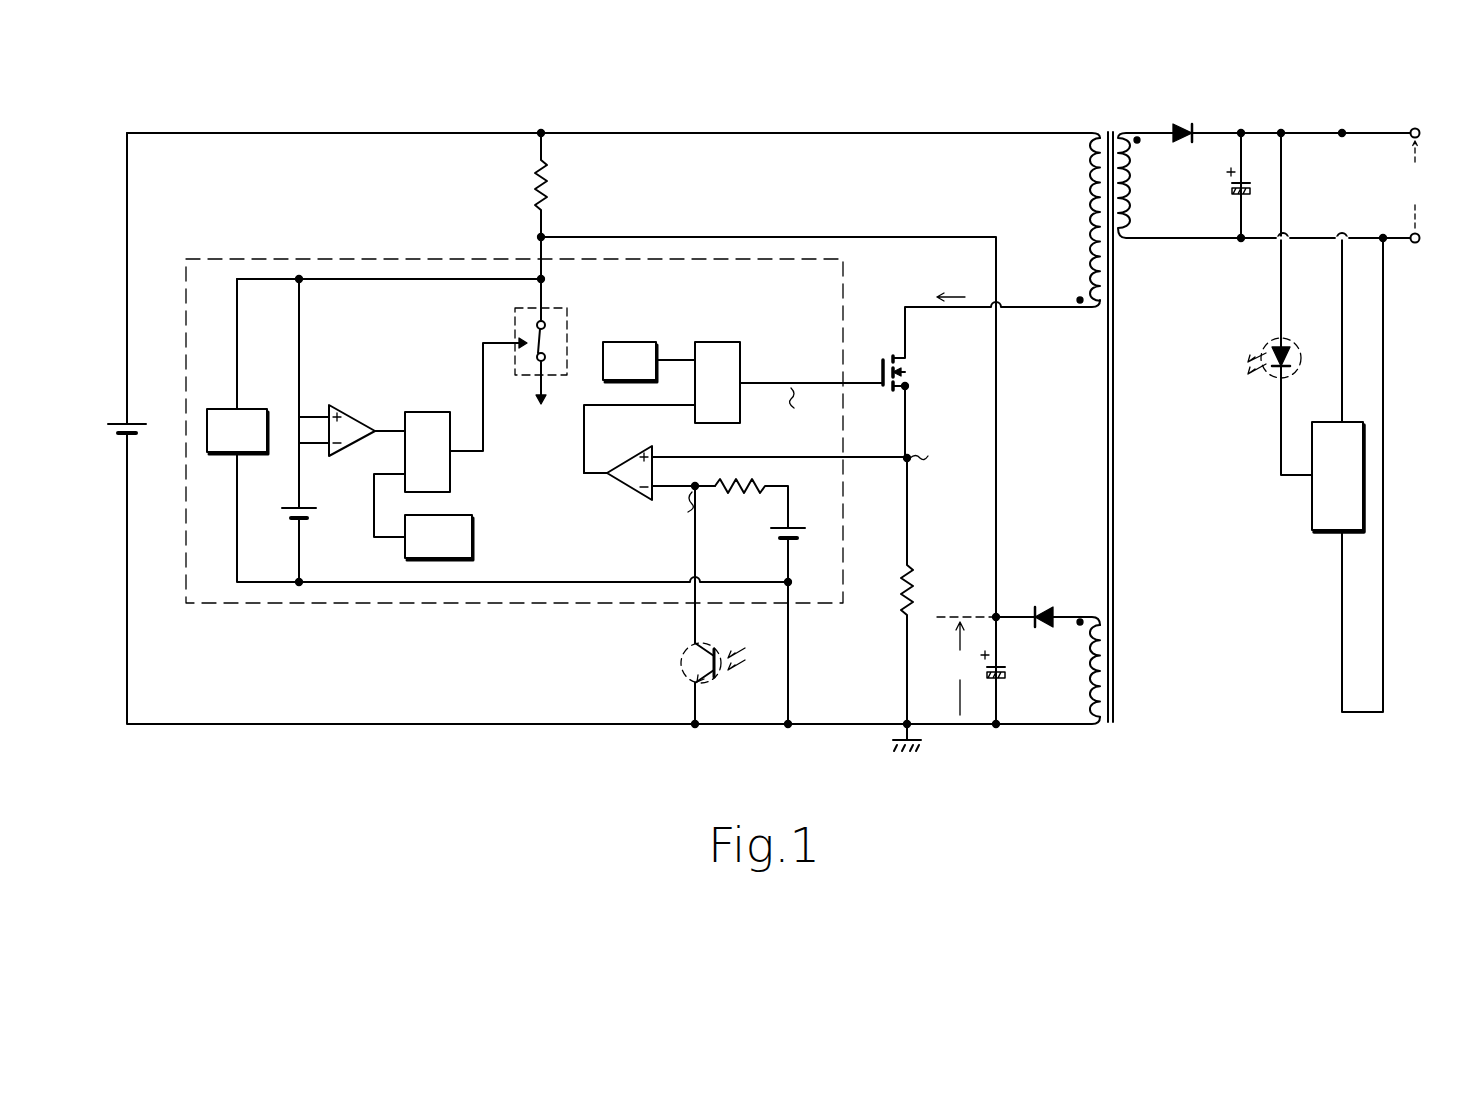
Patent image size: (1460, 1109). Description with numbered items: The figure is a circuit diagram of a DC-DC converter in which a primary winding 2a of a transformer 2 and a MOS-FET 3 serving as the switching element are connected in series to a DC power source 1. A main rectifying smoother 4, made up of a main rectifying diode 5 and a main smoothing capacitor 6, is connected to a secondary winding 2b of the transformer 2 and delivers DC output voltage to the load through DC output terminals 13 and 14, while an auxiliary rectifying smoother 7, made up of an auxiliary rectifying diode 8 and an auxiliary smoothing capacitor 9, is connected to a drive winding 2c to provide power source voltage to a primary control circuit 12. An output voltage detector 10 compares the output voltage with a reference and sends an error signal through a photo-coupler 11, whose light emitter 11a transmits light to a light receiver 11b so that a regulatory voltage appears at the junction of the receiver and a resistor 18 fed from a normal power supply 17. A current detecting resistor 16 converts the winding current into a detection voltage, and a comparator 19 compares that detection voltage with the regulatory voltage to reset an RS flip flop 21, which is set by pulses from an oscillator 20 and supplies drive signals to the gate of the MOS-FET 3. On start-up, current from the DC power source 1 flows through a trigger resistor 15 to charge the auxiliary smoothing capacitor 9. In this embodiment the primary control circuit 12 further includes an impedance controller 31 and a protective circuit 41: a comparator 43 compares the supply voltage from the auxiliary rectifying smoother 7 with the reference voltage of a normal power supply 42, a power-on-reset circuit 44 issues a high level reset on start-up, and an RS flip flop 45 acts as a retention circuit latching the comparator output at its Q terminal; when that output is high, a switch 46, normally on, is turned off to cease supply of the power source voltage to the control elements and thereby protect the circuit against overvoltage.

The DC power source 1 is at (110, 418).
The transformer 2 is at (1106, 126).
The primary winding 2a is at (1085, 226).
The secondary winding 2b is at (1131, 194).
The drive winding 2c is at (1096, 727).
The MOS-FET 3 is at (885, 358).
The main rectifying smoother 4 is at (1210, 128).
The main rectifying diode 5 is at (1183, 130).
The main smoothing capacitor 6 is at (1232, 187).
The auxiliary rectifying smoother 7 is at (1013, 573).
The auxiliary rectifying diode 8 is at (1045, 609).
The auxiliary smoothing capacitor 9 is at (1008, 672).
The output voltage detector 10 is at (1349, 421).
The photo-coupler 11 is at (1249, 383).
The light emitter 11a is at (1278, 344).
The light receiver 11b is at (688, 661).
The primary control circuit 12 is at (413, 608).
The DC output terminal 13 is at (1416, 128).
The DC output terminal 14 is at (1414, 245).
The trigger resistor 15 is at (534, 192).
The current detecting resistor 16 is at (894, 580).
The normal power supply 17 is at (797, 529).
The resistor 18 is at (745, 493).
The comparator 19 is at (632, 497).
The oscillator 20 is at (631, 339).
The RS flip flop 21 is at (718, 339).
The impedance controller 31 is at (218, 408).
The protective circuit 41 is at (386, 333).
The normal power supply 42 is at (316, 512).
The comparator 43 is at (355, 408).
The power-on-reset circuit 44 is at (474, 536).
The RS flip flop 45 is at (428, 409).
The switch 46 is at (511, 327).